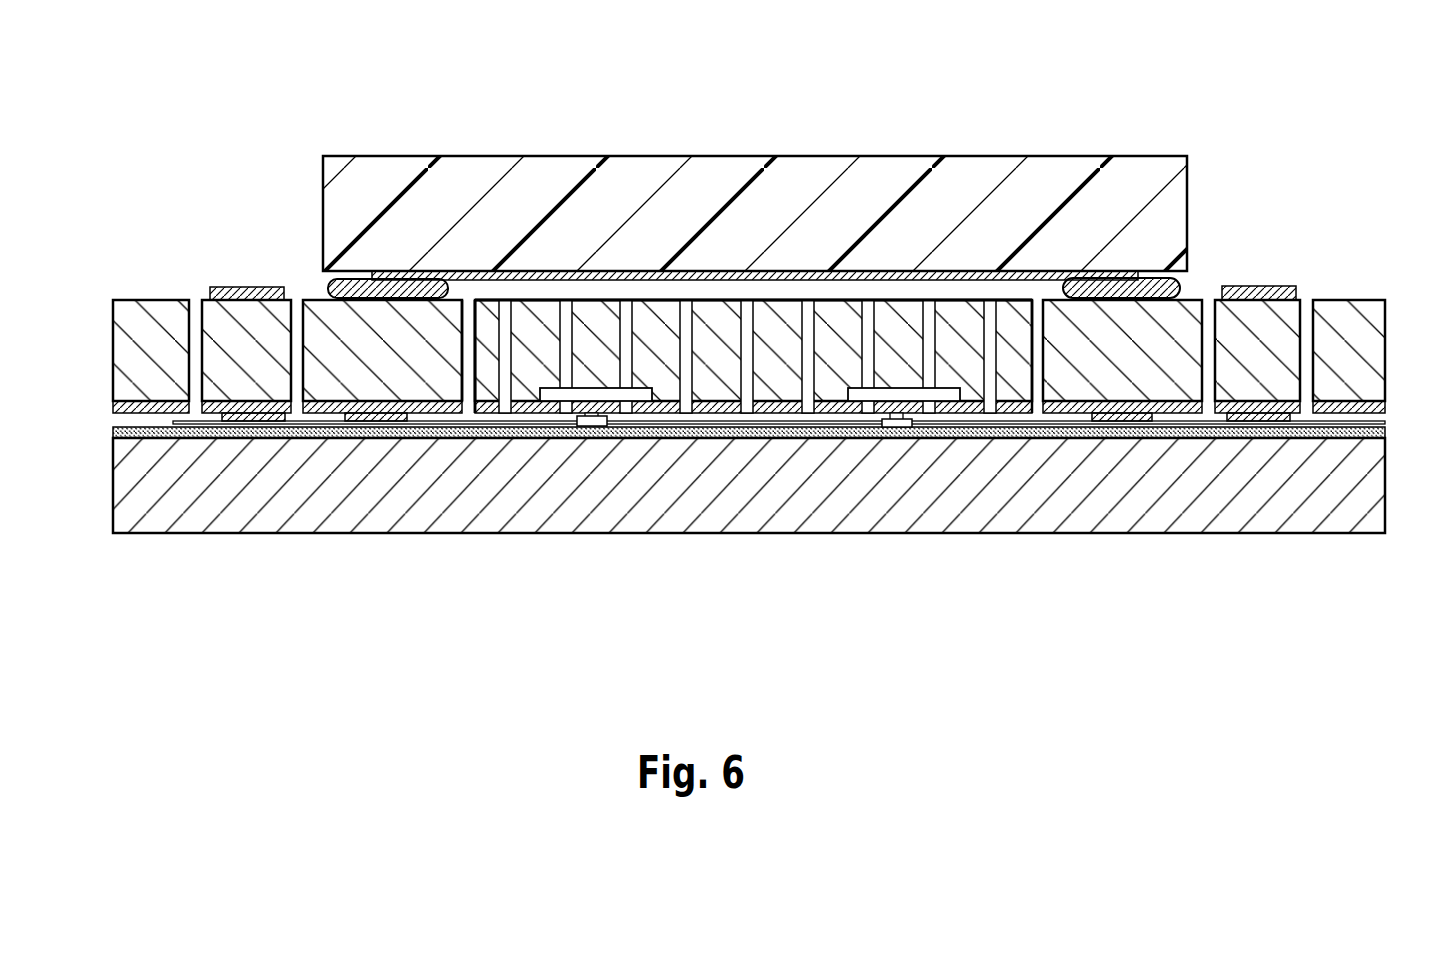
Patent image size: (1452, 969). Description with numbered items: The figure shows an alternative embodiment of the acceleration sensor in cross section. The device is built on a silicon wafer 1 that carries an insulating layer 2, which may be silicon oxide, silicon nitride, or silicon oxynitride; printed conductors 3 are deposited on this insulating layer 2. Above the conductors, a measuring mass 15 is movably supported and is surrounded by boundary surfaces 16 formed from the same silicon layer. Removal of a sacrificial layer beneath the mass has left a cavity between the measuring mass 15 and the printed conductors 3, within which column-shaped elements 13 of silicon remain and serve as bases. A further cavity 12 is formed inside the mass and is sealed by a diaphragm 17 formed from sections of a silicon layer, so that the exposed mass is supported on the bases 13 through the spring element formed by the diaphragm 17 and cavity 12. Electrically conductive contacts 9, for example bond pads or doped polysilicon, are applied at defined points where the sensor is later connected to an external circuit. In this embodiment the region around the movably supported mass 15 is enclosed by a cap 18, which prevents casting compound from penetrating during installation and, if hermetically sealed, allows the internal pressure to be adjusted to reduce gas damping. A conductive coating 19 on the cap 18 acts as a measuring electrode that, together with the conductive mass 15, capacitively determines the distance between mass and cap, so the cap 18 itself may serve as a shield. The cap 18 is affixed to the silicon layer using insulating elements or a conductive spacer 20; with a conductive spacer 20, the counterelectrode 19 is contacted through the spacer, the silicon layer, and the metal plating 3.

The silicon wafer 1 is at (1372, 508).
The insulating layer 2 is at (1385, 432).
The printed conductors 3 is at (1340, 420).
The electrically conductive contacts 9 is at (1277, 290).
The cavity 12 is at (610, 392).
The column-shaped elements 13 is at (590, 418).
The measuring mass 15 is at (715, 318).
The boundary surfaces 16 is at (460, 345).
The diaphragm 17 is at (565, 404).
The cap 18 is at (790, 178).
The conductive coating 19 is at (1040, 270).
The spacer 20 is at (1170, 287).